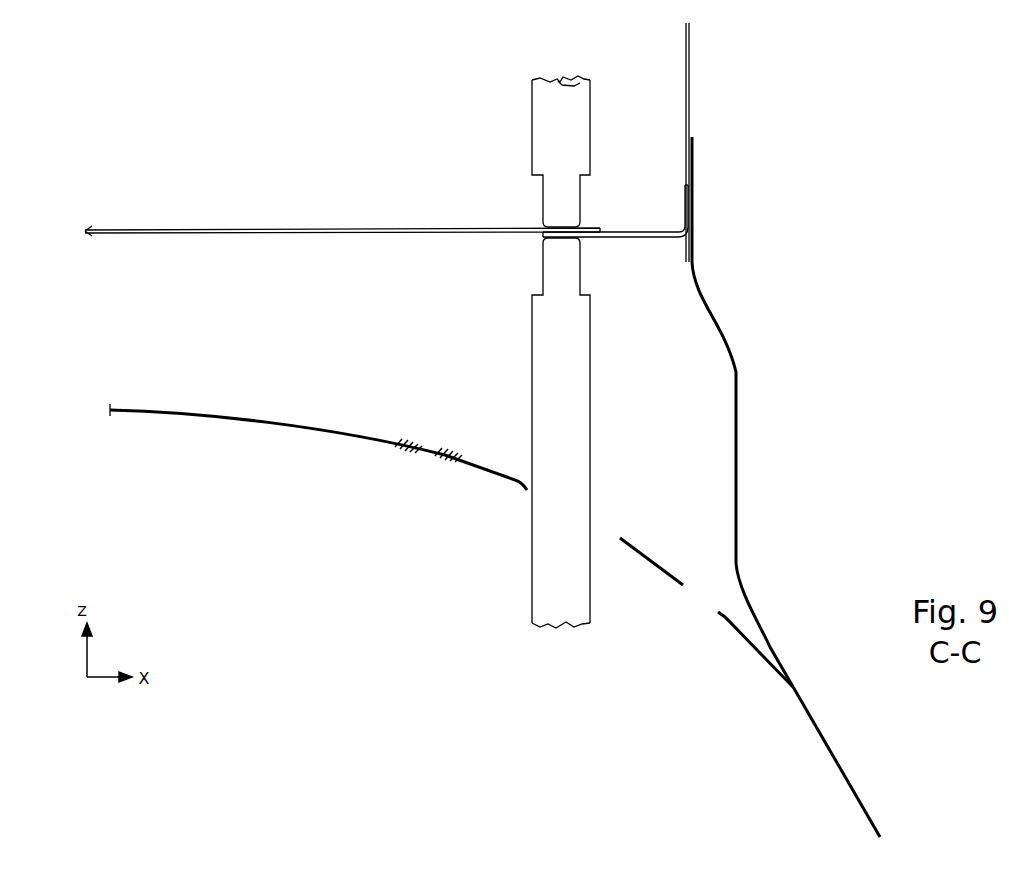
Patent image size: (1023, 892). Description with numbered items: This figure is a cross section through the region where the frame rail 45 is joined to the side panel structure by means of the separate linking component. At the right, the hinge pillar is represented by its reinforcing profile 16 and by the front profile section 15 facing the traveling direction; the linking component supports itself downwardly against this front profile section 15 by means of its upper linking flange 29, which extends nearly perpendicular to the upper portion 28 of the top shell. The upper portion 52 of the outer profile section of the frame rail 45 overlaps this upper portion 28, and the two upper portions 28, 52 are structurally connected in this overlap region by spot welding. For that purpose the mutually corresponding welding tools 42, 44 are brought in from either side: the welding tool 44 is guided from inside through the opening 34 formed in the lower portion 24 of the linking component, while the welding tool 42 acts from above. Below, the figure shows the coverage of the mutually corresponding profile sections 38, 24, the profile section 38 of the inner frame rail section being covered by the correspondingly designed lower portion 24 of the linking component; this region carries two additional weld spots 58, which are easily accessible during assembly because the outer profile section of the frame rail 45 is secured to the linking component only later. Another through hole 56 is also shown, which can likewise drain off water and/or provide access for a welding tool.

The front profile section 15 is at (737, 403).
The reinforcing profile 16 is at (690, 81).
The lower portion 24 is at (497, 475).
The upper portion 28 is at (635, 238).
The upper linking flange 29 is at (684, 193).
The opening 34 is at (608, 550).
The profile section 38 is at (270, 420).
The welding tool 42 is at (542, 120).
The welding tool 44 is at (590, 410).
The frame rail 45 is at (215, 495).
The upper portion 52 is at (213, 235).
The through hole 56 is at (703, 610).
The weld spots 58 is at (405, 450).